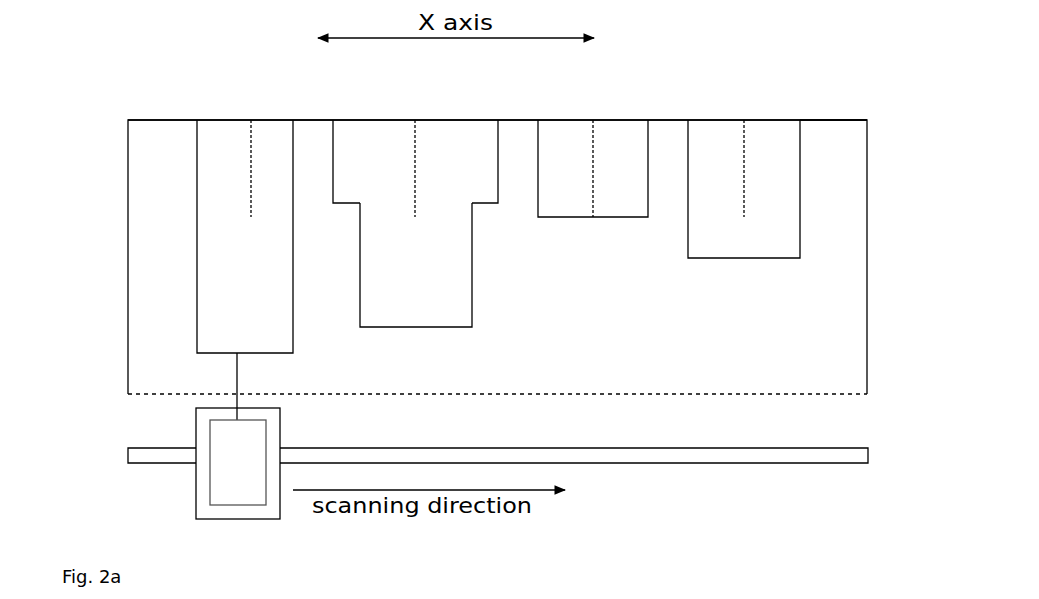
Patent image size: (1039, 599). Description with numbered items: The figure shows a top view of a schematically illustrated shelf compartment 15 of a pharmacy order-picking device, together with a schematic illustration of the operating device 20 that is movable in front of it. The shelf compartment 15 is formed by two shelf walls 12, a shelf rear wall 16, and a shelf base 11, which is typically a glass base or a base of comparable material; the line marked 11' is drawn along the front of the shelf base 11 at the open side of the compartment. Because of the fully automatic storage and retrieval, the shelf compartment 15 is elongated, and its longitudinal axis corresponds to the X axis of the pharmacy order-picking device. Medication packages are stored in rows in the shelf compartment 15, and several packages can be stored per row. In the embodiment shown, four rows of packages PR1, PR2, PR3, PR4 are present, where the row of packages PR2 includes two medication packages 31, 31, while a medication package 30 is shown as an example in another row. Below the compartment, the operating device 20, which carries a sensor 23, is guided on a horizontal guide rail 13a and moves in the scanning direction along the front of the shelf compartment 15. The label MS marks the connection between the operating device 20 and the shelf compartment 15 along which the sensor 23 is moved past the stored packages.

The shelf wall 12 is at (464, 341).
The shelf rear wall 16 is at (168, 120).
The shelf compartment 15 is at (818, 110).
The shelf base 11 is at (713, 180).
The bottom surface / reference line 11' is at (497, 478).
The medication package 30 is at (374, 160).
The medication package 31 is at (428, 270).
The row of packages PR1 is at (245, 222).
The row of packages PR2 is at (418, 154).
The row of packages PR3 is at (593, 154).
The row of packages PR4 is at (744, 175).
The measurement system MS is at (237, 375).
The operating device 20 is at (203, 485).
The sensor 23 is at (237, 463).
The horizontal guide rail 13a is at (676, 463).